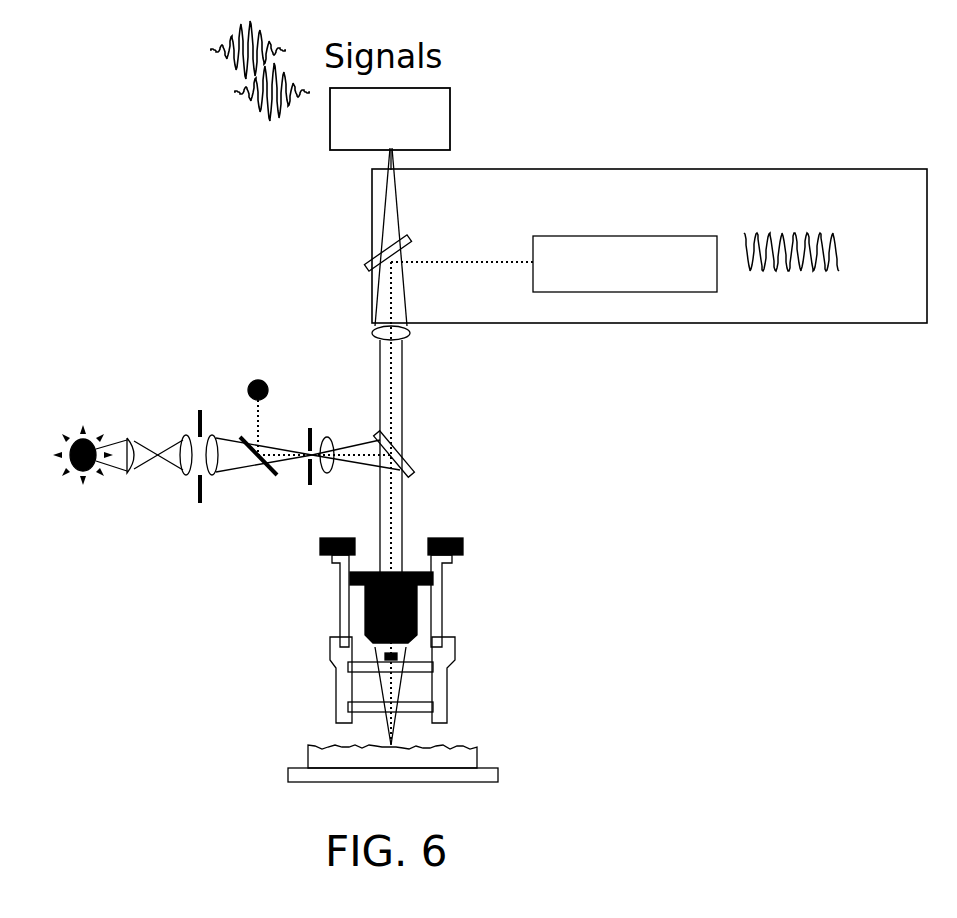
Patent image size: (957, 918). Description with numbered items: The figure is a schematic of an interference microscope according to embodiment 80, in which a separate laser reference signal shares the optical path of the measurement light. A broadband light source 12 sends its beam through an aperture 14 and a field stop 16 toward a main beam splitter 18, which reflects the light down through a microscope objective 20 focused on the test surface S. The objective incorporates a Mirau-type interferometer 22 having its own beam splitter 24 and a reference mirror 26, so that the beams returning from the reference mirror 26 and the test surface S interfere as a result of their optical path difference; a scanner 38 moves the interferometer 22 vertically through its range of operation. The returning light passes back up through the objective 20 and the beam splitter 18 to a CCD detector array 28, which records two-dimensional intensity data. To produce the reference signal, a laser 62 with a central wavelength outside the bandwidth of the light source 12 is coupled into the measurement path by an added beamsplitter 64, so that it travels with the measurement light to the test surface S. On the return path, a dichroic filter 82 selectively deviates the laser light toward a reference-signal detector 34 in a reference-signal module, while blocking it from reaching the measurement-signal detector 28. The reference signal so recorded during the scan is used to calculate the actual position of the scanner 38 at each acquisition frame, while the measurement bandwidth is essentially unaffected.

The light source 12 is at (70, 439).
The aperture 14 is at (198, 422).
The field stop 16 is at (312, 432).
The beam splitter 18 is at (407, 463).
The microscope objective 20 is at (368, 613).
The interferometer 22 is at (453, 657).
The beam splitter 24 is at (368, 700).
The reference mirror 26 is at (362, 672).
The detector array 28 is at (447, 120).
The reference-signal detector 34 is at (615, 233).
The scanner 38 is at (447, 562).
The laser 62 is at (253, 377).
The beamsplitter 64 is at (262, 480).
The embodiment 80 is at (612, 127).
The dichroic filter 82 is at (368, 260).
The test surface S is at (467, 750).